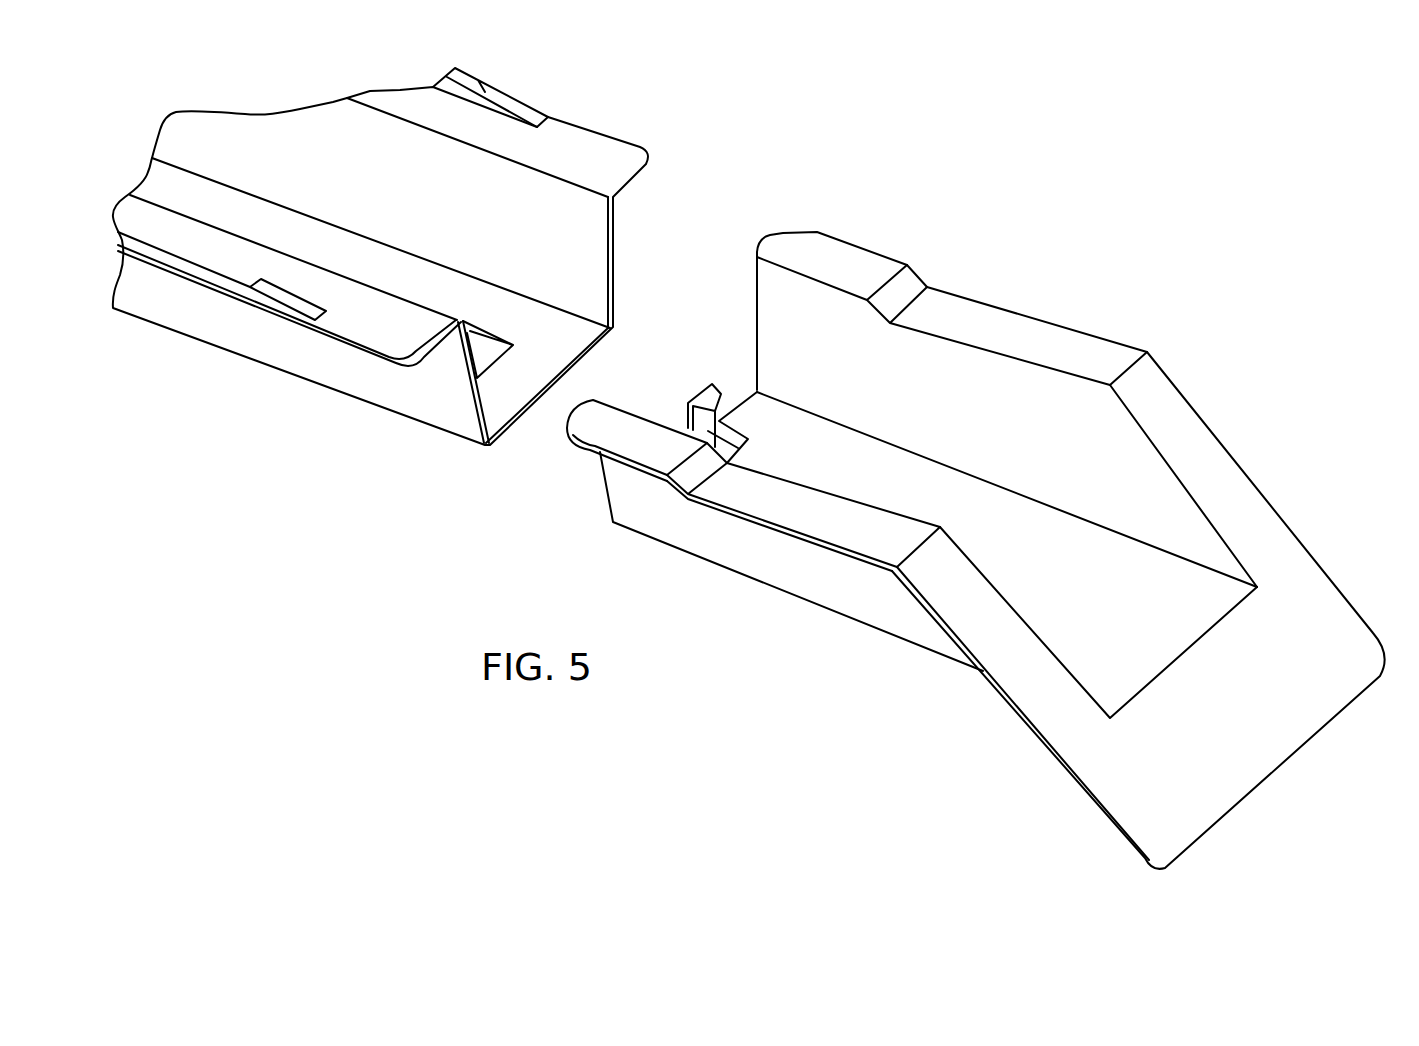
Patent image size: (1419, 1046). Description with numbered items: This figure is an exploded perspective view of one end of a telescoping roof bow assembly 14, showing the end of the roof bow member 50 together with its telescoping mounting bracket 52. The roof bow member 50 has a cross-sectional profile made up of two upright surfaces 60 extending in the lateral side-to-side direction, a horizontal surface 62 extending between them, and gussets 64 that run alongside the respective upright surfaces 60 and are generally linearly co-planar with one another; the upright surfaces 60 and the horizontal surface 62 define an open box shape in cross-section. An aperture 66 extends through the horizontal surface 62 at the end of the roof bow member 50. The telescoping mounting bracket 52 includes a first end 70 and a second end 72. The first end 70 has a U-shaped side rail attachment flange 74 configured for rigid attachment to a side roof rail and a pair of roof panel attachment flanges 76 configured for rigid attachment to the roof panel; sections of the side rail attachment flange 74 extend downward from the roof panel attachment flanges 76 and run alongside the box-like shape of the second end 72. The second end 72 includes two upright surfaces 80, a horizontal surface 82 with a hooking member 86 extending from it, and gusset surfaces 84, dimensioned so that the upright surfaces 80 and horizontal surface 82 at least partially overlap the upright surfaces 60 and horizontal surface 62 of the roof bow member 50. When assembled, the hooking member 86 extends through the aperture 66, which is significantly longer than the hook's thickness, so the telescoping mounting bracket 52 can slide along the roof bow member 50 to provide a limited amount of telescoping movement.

The roof bow assembly 14 is at (885, 141).
The roof bow member 50 is at (569, 113).
The telescoping mounting bracket 52 is at (986, 300).
The upright surfaces 60 is at (615, 270).
The horizontal surface 62 is at (520, 417).
The gussets 64 is at (603, 160).
The aperture 66 is at (497, 340).
The first end 70 is at (1240, 807).
The second end 72 is at (742, 403).
The side rail attachment flange 74 is at (1323, 623).
The roof panel attachment flanges 76 is at (1100, 360).
The upright surfaces 80 is at (790, 323).
The horizontal surface 82 is at (820, 440).
The gusset surfaces 84 is at (803, 247).
The hooking member 86 is at (703, 410).